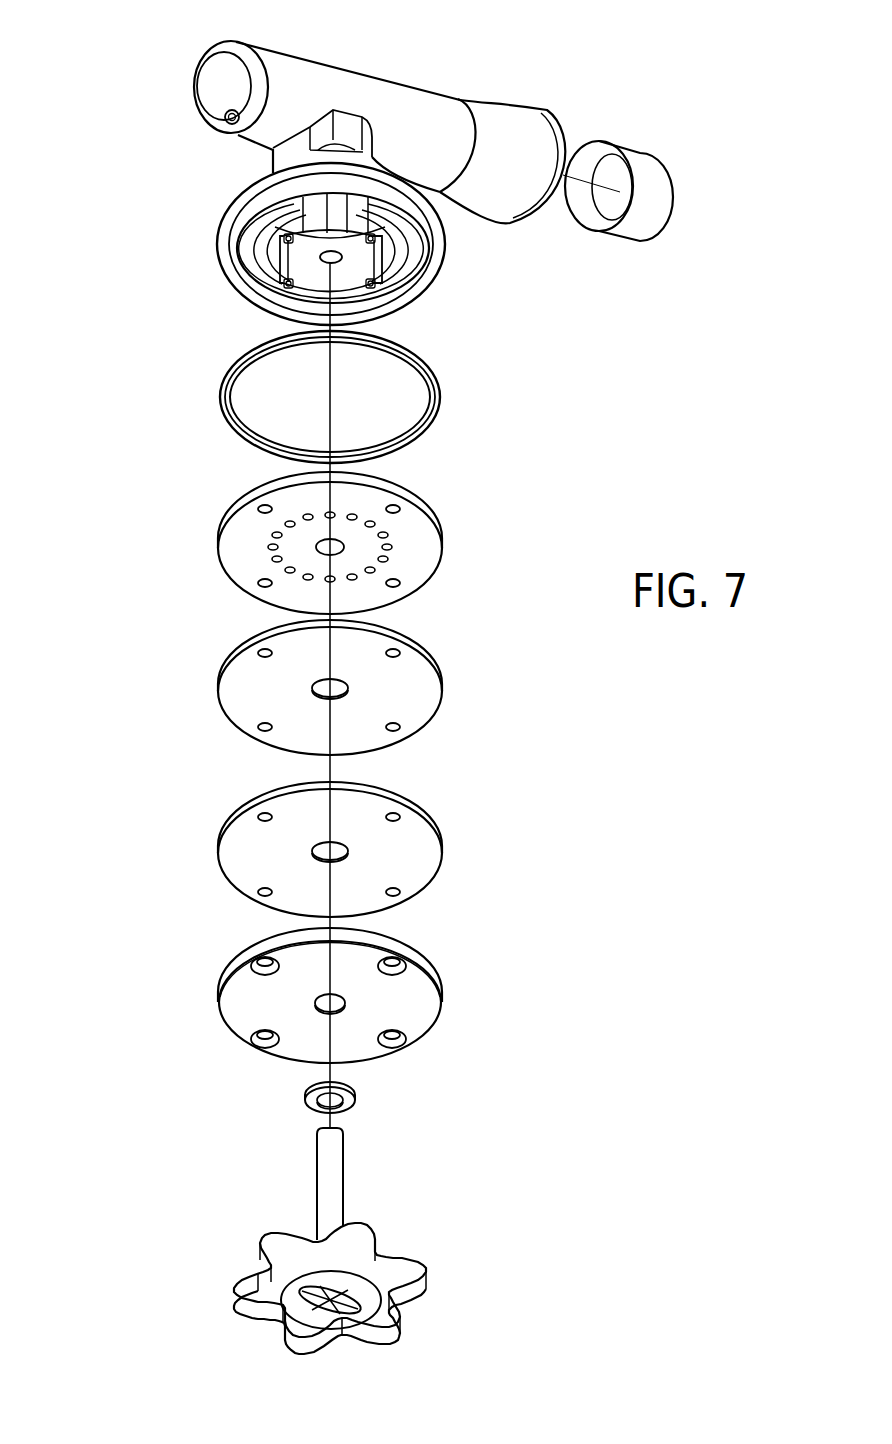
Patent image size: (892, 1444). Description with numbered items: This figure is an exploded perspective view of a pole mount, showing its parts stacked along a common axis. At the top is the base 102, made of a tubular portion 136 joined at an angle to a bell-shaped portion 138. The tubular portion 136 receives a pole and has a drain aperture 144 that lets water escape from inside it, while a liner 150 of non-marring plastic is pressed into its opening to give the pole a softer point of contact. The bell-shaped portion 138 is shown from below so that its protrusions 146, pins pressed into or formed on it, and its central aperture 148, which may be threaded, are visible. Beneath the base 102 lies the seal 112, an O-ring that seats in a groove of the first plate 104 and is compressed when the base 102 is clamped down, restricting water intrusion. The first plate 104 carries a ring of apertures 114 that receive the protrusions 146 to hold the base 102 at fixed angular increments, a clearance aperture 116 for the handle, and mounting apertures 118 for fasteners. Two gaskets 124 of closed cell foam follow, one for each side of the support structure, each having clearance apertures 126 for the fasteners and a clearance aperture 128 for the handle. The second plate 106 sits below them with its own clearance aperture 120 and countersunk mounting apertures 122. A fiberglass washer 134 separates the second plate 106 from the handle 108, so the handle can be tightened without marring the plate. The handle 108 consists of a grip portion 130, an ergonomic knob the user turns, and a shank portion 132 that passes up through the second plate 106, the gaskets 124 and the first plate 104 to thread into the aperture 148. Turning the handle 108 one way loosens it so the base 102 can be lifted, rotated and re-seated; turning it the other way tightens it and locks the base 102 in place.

The base 102 is at (510, 103).
The first plate 104 is at (428, 550).
The second plate 106 is at (433, 1007).
The handle 108 is at (378, 1288).
The seal 112 is at (435, 408).
The apertures 114 is at (268, 547).
The clearance aperture 116 is at (317, 543).
The mounting apertures 118 is at (400, 510).
The clearance aperture 120 is at (315, 1004).
The mounting apertures 122 is at (403, 965).
The gaskets 124 is at (437, 712).
The clearance apertures 126 is at (402, 653).
The clearance aperture 128 is at (313, 688).
The grip portion 130 is at (397, 1240).
The shank portion 132 is at (347, 1167).
The washer 134 is at (357, 1100).
The tubular portion 136 is at (410, 125).
The bell-shaped portion 138 is at (422, 258).
The drain aperture 144 is at (224, 116).
The protrusions 146 is at (283, 282).
The aperture 148 is at (342, 259).
The liner 150 is at (642, 197).